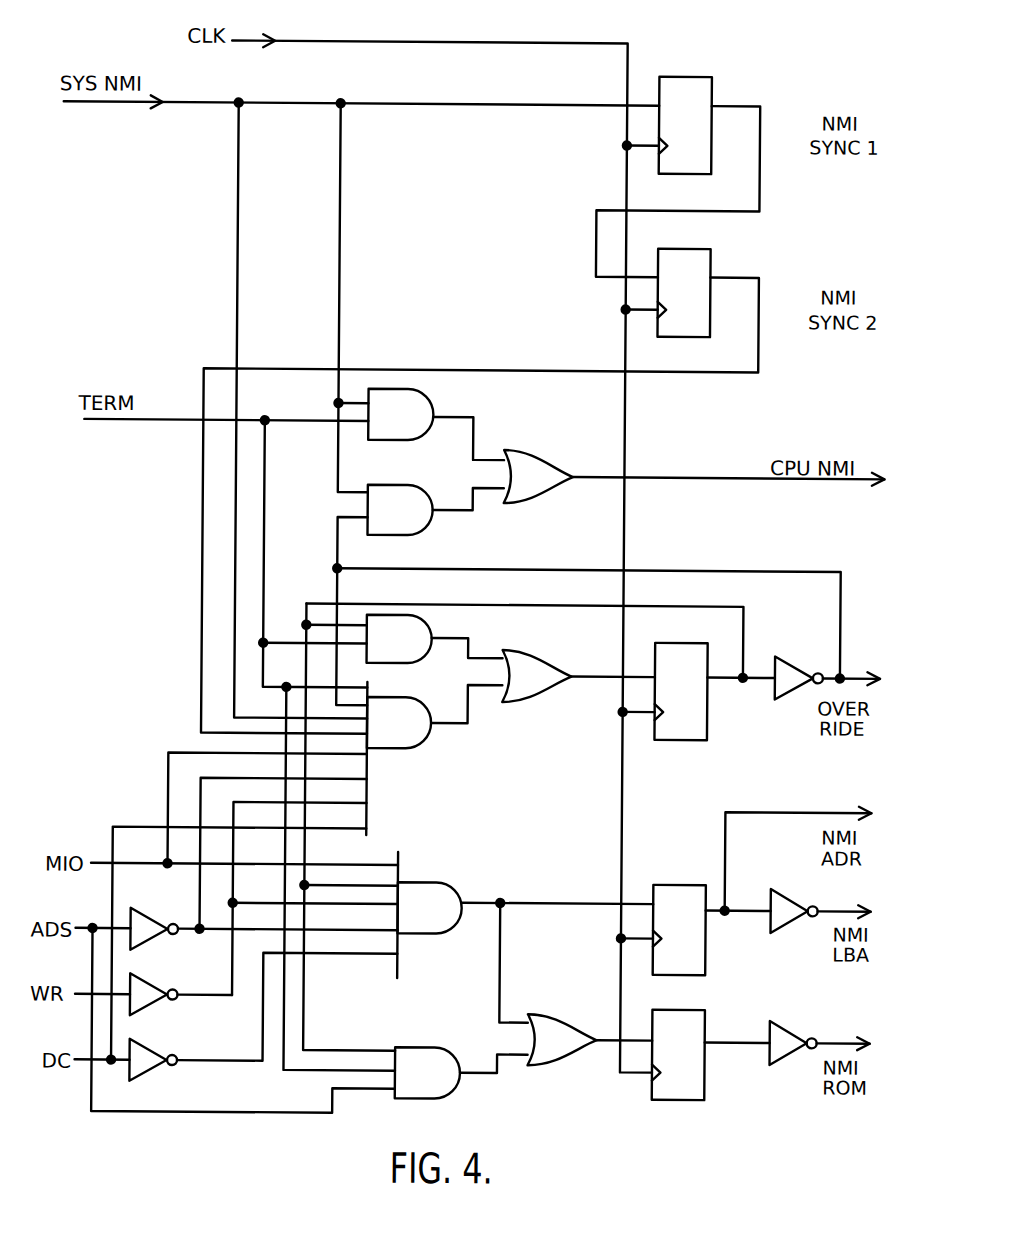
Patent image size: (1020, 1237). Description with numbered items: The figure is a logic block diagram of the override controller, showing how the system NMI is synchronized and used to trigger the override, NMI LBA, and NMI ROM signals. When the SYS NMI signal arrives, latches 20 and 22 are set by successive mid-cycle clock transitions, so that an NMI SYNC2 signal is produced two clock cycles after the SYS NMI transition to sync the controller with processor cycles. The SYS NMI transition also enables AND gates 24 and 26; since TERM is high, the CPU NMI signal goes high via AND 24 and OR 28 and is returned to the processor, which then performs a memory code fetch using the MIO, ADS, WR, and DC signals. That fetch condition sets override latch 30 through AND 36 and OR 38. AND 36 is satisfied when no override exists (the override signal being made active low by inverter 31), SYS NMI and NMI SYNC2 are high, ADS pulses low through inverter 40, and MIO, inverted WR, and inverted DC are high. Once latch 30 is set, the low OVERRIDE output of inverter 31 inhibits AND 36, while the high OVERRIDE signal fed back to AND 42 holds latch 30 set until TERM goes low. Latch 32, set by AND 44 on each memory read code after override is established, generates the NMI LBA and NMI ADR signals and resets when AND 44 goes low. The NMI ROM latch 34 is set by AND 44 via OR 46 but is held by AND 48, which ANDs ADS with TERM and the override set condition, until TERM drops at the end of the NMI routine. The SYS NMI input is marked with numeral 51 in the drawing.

The latch 20 is at (676, 76).
The latch 22 is at (686, 248).
The AND gate 24 is at (432, 400).
The AND gate 26 is at (409, 486).
The OR gate 28 is at (532, 450).
The override latch 30 is at (689, 739).
The inverter 31 is at (798, 656).
The latch 32 is at (685, 884).
The NMI ROM latch 34 is at (686, 1009).
The AND gate 36 is at (421, 748).
The OR gate 38 is at (523, 702).
The inverter 40 is at (147, 923).
The AND gate 42 is at (435, 630).
The AND gate 44 is at (437, 882).
The OR gate 46 is at (553, 1016).
The AND gate 48 is at (423, 1048).
The system NMI signal 51 is at (362, 90).